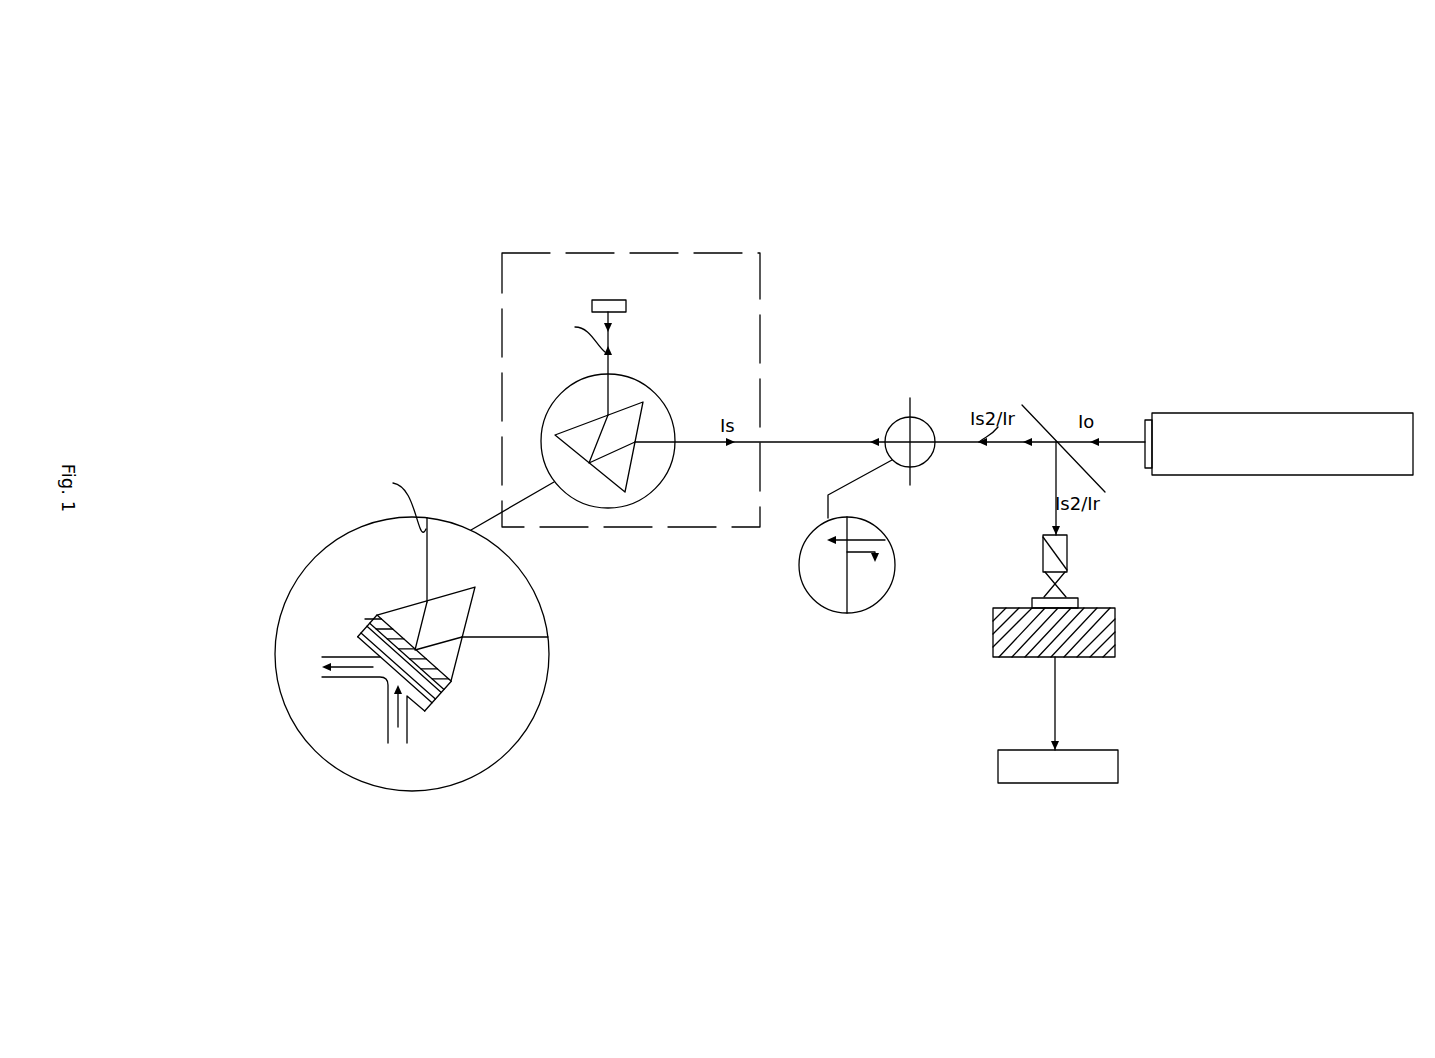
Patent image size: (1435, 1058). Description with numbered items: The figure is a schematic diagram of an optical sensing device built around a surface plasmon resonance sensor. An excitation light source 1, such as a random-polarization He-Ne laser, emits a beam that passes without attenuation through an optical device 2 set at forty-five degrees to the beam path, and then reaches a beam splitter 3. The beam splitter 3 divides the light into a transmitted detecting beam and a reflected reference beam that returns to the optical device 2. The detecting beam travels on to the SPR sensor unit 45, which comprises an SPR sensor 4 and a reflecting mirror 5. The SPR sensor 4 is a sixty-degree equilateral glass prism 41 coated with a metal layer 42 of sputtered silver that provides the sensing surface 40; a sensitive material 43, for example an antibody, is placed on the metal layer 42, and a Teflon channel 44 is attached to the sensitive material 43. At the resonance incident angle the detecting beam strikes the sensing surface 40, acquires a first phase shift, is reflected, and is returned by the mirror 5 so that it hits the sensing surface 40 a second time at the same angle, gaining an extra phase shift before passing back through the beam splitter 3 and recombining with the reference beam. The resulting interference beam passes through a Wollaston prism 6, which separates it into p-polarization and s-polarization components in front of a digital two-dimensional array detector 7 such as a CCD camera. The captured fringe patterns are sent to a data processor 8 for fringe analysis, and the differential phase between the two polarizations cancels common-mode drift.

The excitation light source 1 is at (1212, 430).
The optical device 2 is at (1028, 408).
The beam splitter 3 is at (912, 403).
The SPR sensor 4 is at (582, 413).
The reflecting mirror 5 is at (626, 306).
The Wollaston prism 6 is at (1068, 550).
The digital two-dimensional array detector 7 is at (1080, 603).
The data processor 8 is at (1103, 767).
The sensing surface 40 is at (453, 678).
The glass prism 41 is at (652, 403).
The metal layer 42 is at (373, 613).
The sensitive material 43 is at (363, 627).
The channel 44 is at (353, 638).
The SPR sensor unit 45 is at (745, 253).